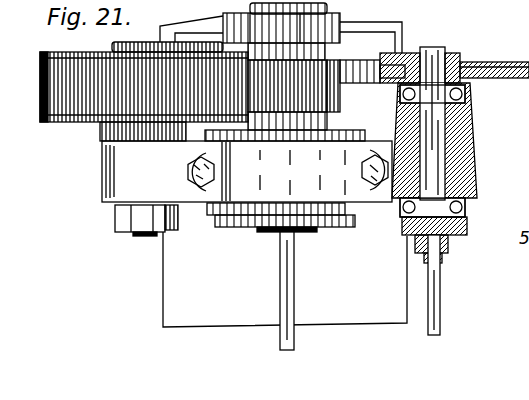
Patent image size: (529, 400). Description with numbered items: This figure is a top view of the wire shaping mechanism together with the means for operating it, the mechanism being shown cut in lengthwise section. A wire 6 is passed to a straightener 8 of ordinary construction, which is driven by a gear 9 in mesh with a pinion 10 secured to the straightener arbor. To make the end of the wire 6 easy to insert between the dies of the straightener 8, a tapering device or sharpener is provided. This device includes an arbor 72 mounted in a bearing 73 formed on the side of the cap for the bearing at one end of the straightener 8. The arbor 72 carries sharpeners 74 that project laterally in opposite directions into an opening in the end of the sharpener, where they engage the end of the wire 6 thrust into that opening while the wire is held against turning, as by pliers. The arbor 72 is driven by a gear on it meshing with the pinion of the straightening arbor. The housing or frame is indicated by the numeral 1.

The housing 1 is at (168, 277).
The wire 6 is at (287, 280).
The straightener 8 is at (347, 39).
The gear 9 is at (76, 105).
The pinion 10 is at (307, 103).
The arbor 72 is at (441, 117).
The bearing 73 is at (470, 151).
The sharpeners 74 is at (463, 228).